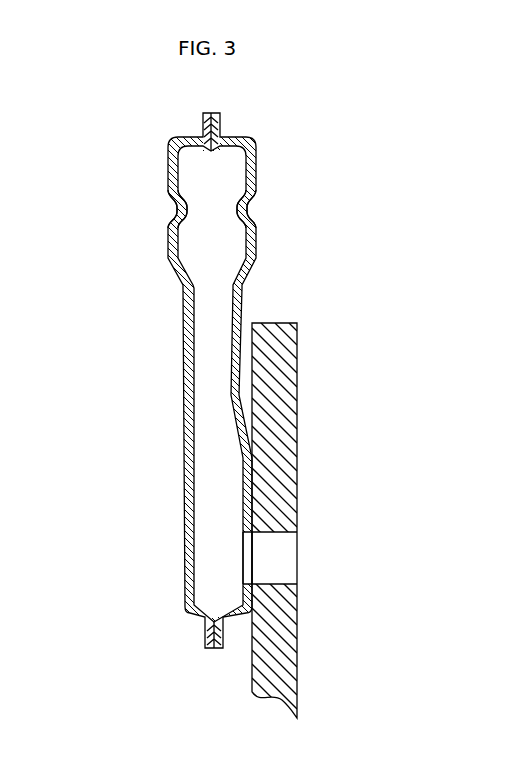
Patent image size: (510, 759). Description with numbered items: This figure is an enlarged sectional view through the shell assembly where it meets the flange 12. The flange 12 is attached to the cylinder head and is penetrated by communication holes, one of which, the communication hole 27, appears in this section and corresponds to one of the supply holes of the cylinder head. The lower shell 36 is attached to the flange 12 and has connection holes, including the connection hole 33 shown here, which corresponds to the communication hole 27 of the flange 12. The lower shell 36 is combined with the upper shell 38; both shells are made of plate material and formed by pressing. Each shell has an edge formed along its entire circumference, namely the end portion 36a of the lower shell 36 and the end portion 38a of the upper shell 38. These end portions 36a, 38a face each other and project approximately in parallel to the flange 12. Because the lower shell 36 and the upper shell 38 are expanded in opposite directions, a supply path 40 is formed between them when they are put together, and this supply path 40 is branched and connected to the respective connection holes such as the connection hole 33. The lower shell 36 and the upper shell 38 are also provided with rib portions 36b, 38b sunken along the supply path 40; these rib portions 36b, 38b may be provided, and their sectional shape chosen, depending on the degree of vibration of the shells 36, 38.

The flange 12 is at (285, 360).
The communication hole 27 is at (253, 582).
The connection hole 33 is at (276, 534).
The lower shell 36 is at (256, 170).
The end portion of lower shell 36a is at (220, 122).
The rib portion of lower shell 36b is at (248, 220).
The upper shell 38 is at (168, 171).
The end portion of upper shell 38a is at (203, 120).
The rib portion of upper shell 38b is at (178, 213).
The supply path 40 is at (205, 248).